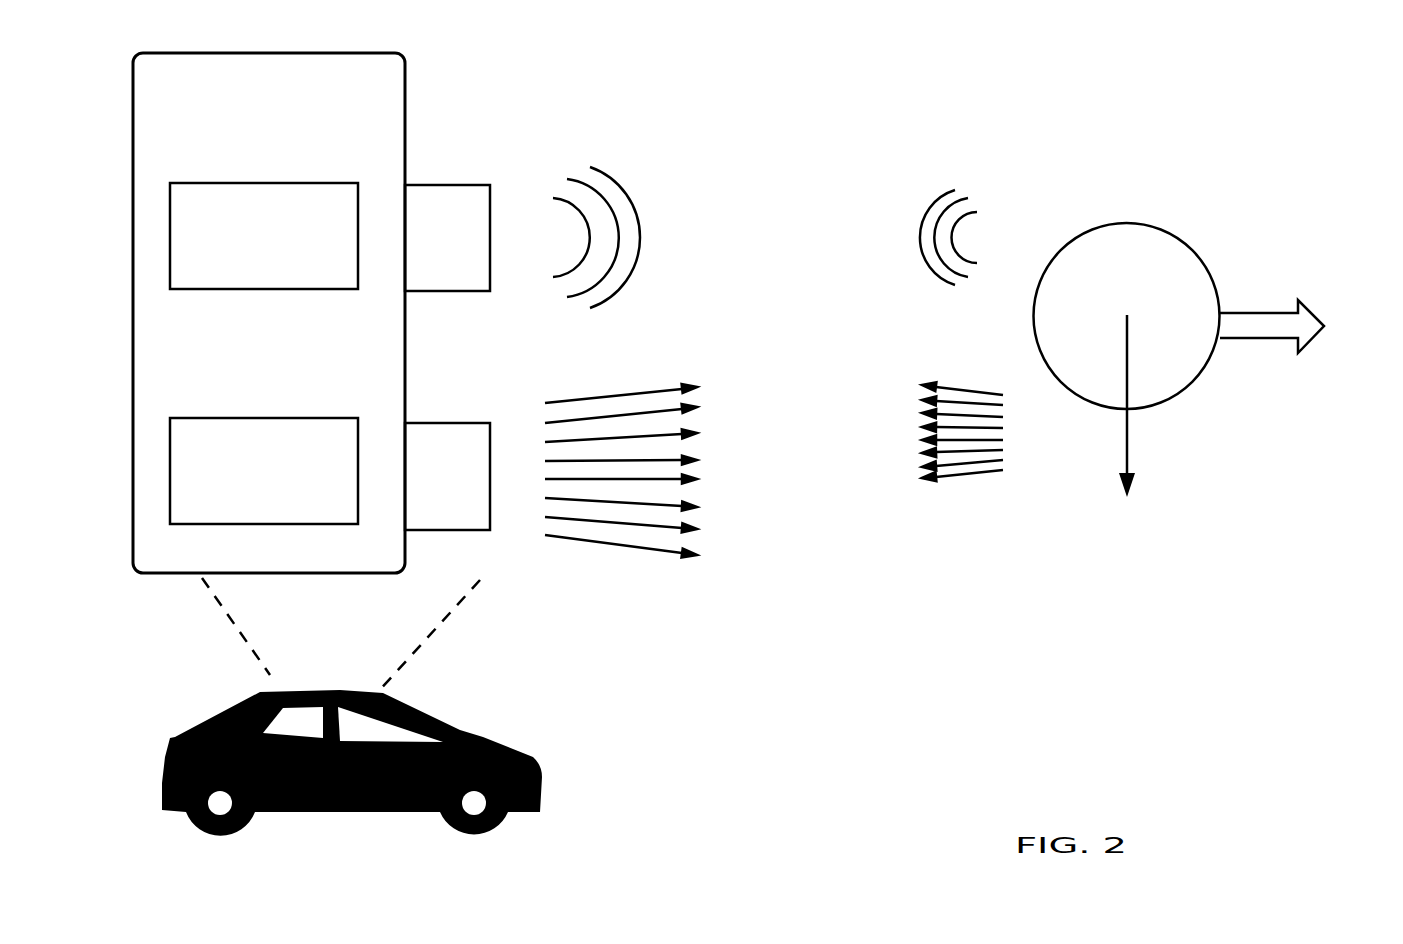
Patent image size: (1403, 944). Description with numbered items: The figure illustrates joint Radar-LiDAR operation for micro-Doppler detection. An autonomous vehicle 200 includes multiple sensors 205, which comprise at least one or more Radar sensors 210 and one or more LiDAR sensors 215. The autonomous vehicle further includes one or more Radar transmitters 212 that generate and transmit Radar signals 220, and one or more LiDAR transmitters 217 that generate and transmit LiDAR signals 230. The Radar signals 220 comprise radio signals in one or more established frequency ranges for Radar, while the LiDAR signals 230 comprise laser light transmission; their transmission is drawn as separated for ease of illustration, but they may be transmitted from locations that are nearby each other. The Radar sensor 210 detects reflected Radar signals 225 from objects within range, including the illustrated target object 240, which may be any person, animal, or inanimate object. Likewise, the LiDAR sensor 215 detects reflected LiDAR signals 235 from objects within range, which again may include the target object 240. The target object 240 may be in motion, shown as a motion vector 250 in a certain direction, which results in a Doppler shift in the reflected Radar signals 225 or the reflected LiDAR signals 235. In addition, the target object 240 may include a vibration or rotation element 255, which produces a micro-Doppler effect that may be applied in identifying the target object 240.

The autonomous vehicle 200 is at (470, 723).
The multiple sensors 205 is at (287, 120).
The Radar sensor 210 is at (284, 262).
The Radar transmitter 212 is at (464, 250).
The LiDAR sensor 215 is at (284, 499).
The LiDAR transmitter 217 is at (464, 487).
The Radar signals 220 is at (652, 143).
The reflected Radar signals 225 is at (977, 176).
The LiDAR signals 230 is at (668, 573).
The reflected LiDAR signals 235 is at (995, 517).
The target object 240 is at (1200, 258).
The motion vector 250 is at (1267, 333).
The vibration or rotation element 255 is at (1128, 450).